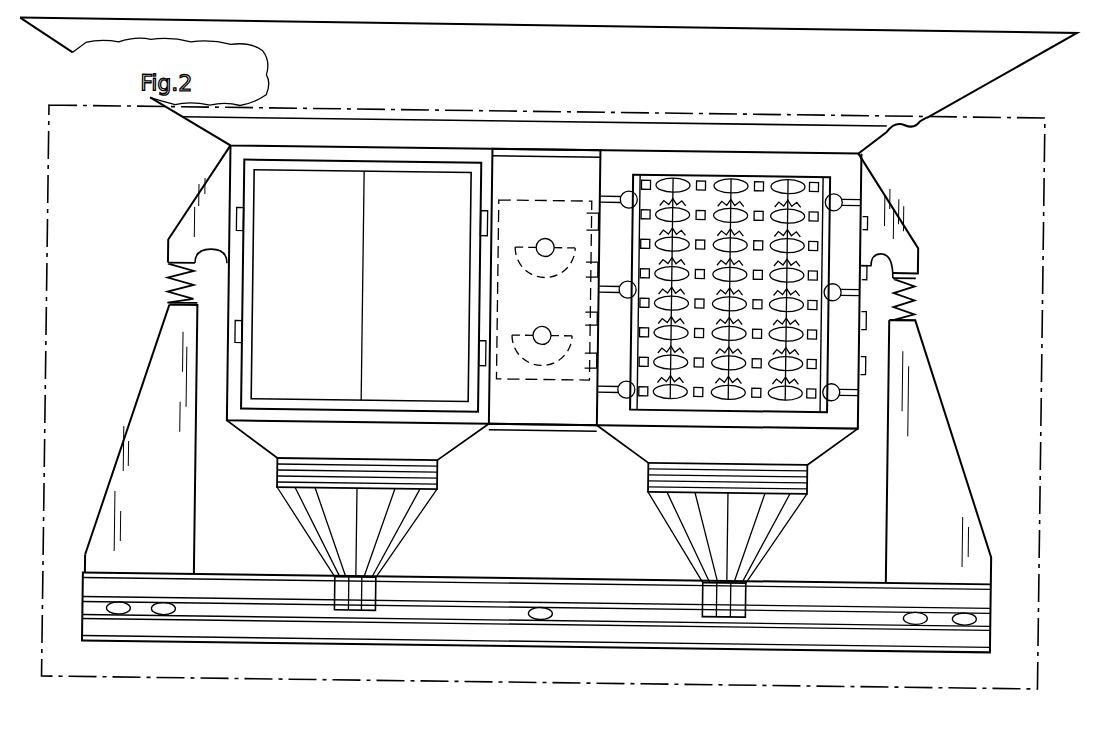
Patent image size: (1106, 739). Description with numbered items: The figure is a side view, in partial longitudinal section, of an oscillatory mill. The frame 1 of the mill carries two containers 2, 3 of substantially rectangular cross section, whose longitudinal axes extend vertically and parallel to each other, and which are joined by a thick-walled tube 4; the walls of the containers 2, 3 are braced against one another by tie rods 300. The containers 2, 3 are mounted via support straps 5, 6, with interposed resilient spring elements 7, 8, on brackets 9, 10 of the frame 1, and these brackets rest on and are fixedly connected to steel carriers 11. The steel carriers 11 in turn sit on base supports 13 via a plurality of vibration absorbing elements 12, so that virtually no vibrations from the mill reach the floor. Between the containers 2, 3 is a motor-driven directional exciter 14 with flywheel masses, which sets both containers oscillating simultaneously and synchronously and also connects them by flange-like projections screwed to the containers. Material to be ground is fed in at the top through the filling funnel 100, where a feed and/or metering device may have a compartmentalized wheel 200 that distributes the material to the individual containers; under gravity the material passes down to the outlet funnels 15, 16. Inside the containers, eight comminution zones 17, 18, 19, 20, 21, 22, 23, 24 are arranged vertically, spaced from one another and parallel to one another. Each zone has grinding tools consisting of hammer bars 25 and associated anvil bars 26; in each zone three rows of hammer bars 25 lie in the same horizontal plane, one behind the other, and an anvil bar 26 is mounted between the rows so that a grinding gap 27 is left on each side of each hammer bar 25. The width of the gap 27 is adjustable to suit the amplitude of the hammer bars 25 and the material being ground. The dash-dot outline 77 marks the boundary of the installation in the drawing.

The frame 1 is at (135, 464).
The container 2 is at (415, 145).
The container 3 is at (778, 160).
The thick-walled tube 4 is at (519, 144).
The support strap 5 is at (196, 210).
The support strap 6 is at (889, 206).
The resilient spring element 7 is at (172, 281).
The resilient spring element 8 is at (918, 287).
The bracket 9 is at (123, 518).
The bracket 10 is at (954, 531).
The steel carrier 11 is at (146, 586).
The vibration absorbing element 12 is at (172, 613).
The base support 13 is at (410, 625).
The directional exciter 14 is at (534, 226).
The outlet funnel 15 is at (320, 504).
The outlet funnel 16 is at (706, 531).
The comminution zone 17 is at (833, 173).
The comminution zone 18 is at (829, 187).
The comminution zone 19 is at (817, 236).
The comminution zone 20 is at (825, 267).
The comminution zone 21 is at (826, 298).
The comminution zone 22 is at (826, 325).
The comminution zone 23 is at (826, 355).
The comminution zone 24 is at (827, 383).
The hammer bar 25 is at (725, 176).
The anvil bar 26 is at (646, 388).
The gap 27 is at (652, 172).
The boundary of installation 77 is at (1044, 634).
The filling funnel 100 is at (1000, 71).
The compartmentalized wheel 200 is at (858, 124).
The tie rod 300 is at (907, 212).